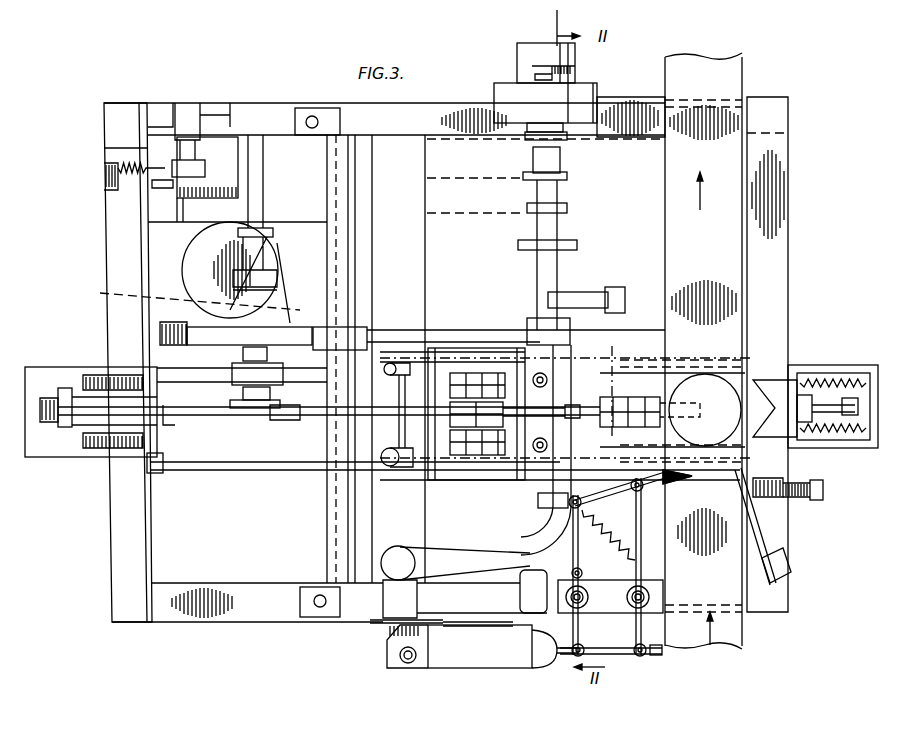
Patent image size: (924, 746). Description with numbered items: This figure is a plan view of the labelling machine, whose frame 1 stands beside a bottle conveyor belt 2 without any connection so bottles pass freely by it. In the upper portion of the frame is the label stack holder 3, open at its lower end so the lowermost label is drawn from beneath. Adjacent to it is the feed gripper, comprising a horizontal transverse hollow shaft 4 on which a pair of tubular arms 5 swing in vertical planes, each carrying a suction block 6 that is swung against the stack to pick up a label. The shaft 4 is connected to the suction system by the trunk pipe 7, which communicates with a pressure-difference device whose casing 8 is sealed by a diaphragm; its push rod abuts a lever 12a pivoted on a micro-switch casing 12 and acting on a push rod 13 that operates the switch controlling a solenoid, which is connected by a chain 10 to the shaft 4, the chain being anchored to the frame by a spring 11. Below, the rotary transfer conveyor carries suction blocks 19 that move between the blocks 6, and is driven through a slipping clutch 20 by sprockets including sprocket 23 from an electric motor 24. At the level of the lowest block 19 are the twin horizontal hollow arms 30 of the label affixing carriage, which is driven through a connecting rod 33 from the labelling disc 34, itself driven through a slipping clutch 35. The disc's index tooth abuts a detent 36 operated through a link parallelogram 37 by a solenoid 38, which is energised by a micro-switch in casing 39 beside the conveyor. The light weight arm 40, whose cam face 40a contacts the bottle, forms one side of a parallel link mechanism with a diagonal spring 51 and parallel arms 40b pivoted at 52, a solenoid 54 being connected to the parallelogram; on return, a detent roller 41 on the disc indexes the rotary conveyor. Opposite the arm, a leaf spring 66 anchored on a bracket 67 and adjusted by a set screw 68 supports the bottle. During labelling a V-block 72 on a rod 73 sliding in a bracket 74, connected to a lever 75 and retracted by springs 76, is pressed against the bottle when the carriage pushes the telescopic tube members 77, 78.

The frame 1 is at (770, 280).
The bottle conveyor belt 2 is at (724, 254).
The label stack holder 3 is at (525, 362).
The horizontal transverse hollow shaft 4 is at (565, 292).
The tubular arms 5 is at (566, 404).
The suction block 6 is at (462, 381).
The trunk pipe 7 is at (392, 560).
The casing 8 is at (578, 88).
The chain 10 is at (297, 174).
The spring 11 is at (118, 165).
The micro-switch casing 12 is at (573, 53).
The lever 12a is at (577, 72).
The push rod 13 is at (520, 77).
The suction block 19 is at (585, 438).
The slipping clutch 20 is at (578, 248).
The sprocket 23 is at (162, 186).
The electric motor 24 is at (190, 264).
The twin horizontal hollow arms 30 is at (465, 380).
The connecting rod 33 is at (303, 416).
The labelling disc 34 is at (292, 412).
The slipping clutch 35 is at (186, 297).
The detent 36 is at (272, 415).
The link parallelogram 37 is at (165, 412).
The solenoid 38 is at (68, 372).
The micro-switch casing 39 is at (527, 596).
The light weight arm 40 is at (660, 490).
The cam face 40a is at (688, 480).
The parallel arms 40b is at (645, 662).
The detent roller 41 is at (235, 388).
The diagonal spring 51 is at (608, 535).
The pivot 52 is at (610, 610).
The solenoid 54 is at (447, 655).
The leaf spring 66 is at (733, 507).
The bracket 67 is at (788, 566).
The set screw 68 is at (832, 486).
The V-block 72 is at (773, 386).
The rod 73 is at (862, 413).
The bracket 74 is at (805, 397).
The lever 75 is at (860, 406).
The springs 76 is at (838, 383).
The telescopic tube member 77 is at (712, 402).
The telescopic tube member 78 is at (650, 422).